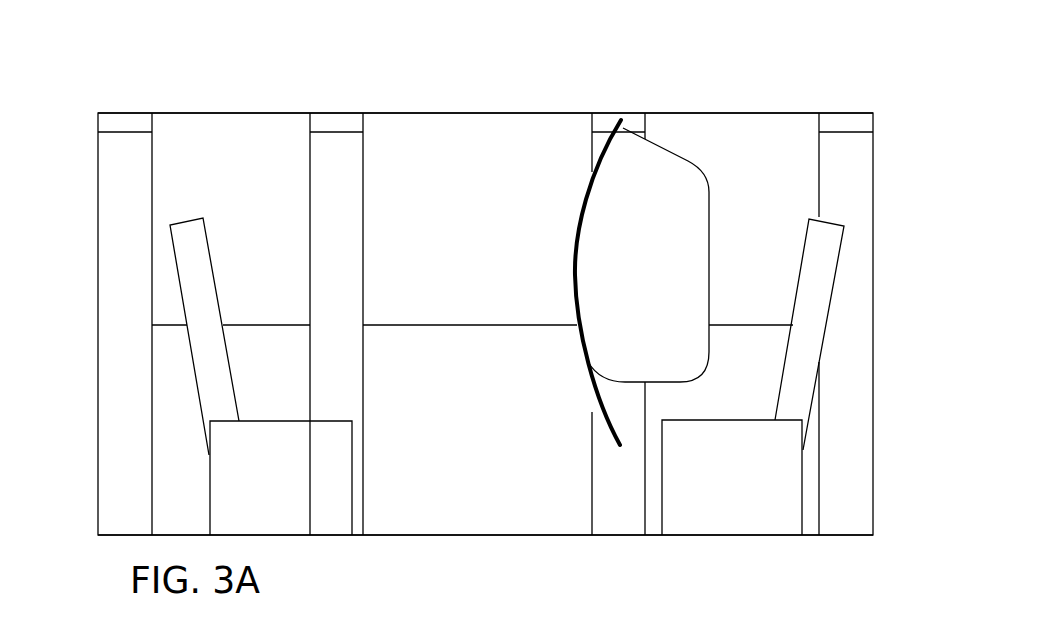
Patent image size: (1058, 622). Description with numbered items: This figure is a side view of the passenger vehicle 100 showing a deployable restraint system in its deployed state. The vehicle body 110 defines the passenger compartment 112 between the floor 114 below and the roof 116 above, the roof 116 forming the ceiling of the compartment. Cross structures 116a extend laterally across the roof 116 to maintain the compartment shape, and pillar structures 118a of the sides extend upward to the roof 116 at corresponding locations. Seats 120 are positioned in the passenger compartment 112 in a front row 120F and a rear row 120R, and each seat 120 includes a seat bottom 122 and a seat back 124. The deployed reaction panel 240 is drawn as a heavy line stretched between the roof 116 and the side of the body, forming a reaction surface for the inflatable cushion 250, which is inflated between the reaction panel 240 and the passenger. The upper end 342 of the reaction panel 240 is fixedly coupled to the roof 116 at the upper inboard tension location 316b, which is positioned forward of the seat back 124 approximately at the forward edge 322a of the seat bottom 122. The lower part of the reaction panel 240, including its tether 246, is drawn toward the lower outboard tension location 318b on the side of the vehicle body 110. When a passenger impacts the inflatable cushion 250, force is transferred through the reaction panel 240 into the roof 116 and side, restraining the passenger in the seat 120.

The passenger vehicle 100 is at (897, 70).
The vehicle body 110 is at (740, 72).
The passenger compartment 112 is at (758, 128).
The floor 114 is at (513, 537).
The roof 116 is at (482, 113).
The cross structure 116a is at (342, 118).
The pillar structure 118a is at (343, 210).
The seat 120 is at (288, 290).
The front row 120F is at (118, 195).
The rear row 120R is at (863, 196).
The seat bottom 122 is at (506, 477).
The seat back 124 is at (185, 252).
The reaction panel 240 is at (575, 270).
The tether 246 is at (600, 410).
The inflatable cushion 250 is at (648, 255).
The upper inboard tension location 316b is at (620, 116).
The lower outboard tension location 318b is at (597, 437).
The forward edge 322a is at (663, 417).
The upper end 342 is at (600, 140).